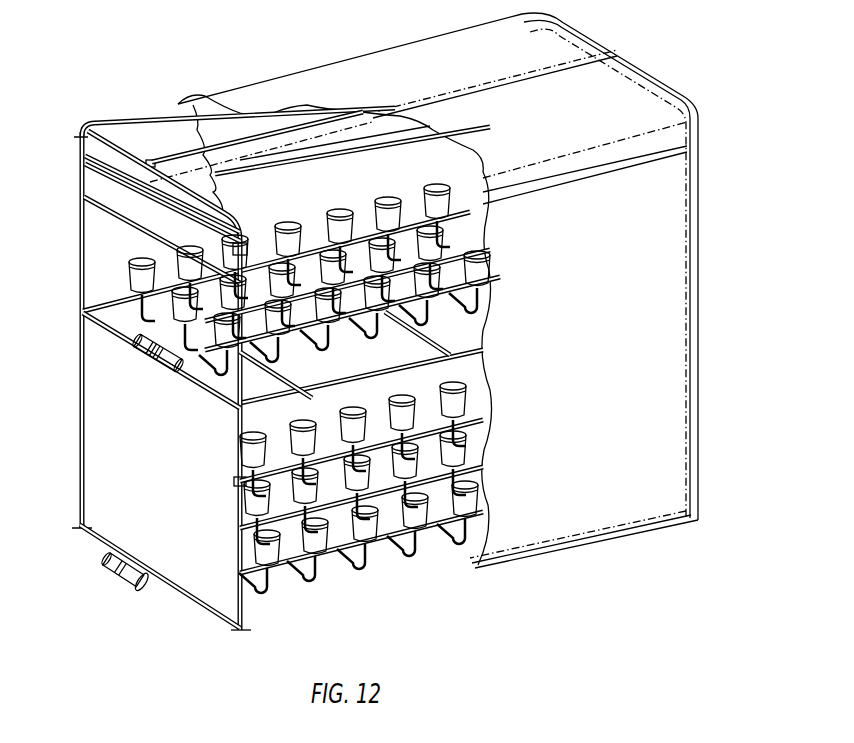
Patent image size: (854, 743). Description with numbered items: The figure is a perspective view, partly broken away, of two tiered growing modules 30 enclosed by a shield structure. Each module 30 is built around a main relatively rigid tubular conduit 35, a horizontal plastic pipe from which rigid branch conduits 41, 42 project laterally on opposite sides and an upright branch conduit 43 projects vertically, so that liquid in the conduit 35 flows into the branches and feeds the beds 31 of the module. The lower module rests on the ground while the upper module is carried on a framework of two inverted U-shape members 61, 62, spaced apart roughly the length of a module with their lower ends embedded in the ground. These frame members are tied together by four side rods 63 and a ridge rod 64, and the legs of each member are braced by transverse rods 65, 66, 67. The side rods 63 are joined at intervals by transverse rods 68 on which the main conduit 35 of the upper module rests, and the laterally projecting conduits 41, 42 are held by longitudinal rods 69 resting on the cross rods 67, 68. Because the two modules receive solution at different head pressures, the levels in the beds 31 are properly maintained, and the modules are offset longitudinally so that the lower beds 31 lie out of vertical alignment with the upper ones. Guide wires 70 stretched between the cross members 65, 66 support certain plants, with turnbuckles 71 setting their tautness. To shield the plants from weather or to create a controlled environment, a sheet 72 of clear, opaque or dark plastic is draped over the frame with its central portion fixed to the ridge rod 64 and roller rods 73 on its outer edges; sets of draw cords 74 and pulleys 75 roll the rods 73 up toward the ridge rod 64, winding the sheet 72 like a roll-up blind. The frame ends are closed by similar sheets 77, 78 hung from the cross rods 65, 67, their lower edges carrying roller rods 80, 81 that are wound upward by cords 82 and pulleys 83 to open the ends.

The module 30 is at (212, 342).
The beds 31 is at (309, 377).
The main tubular conduit 35 is at (407, 292).
The branch conduit 41 is at (398, 263).
The branch conduit 42 is at (425, 322).
The upright branch conduit 43 is at (140, 352).
The inverted U-shape member 61 is at (78, 230).
The inverted U-shape member 62 is at (677, 90).
The side rods 63 is at (137, 118).
The ridge rod 64 is at (182, 158).
The transverse rod 65 is at (203, 217).
The transverse rod 66 is at (128, 222).
The transverse rod 67 is at (108, 326).
The transverse rods 68 is at (277, 373).
The rods 69 is at (351, 296).
The guide wires 70 is at (303, 160).
The turnbuckles 71 is at (176, 196).
The sheet 72 is at (665, 415).
The roller rods 73 is at (322, 460).
The draw cords 74 is at (643, 75).
The pulleys 75 is at (623, 53).
The sheet 77 is at (120, 176).
The sheet 78 is at (107, 425).
The roller rod 80 is at (248, 246).
The roller rod 81 is at (200, 604).
The cords 82 is at (232, 482).
The pulleys 83 is at (90, 125).